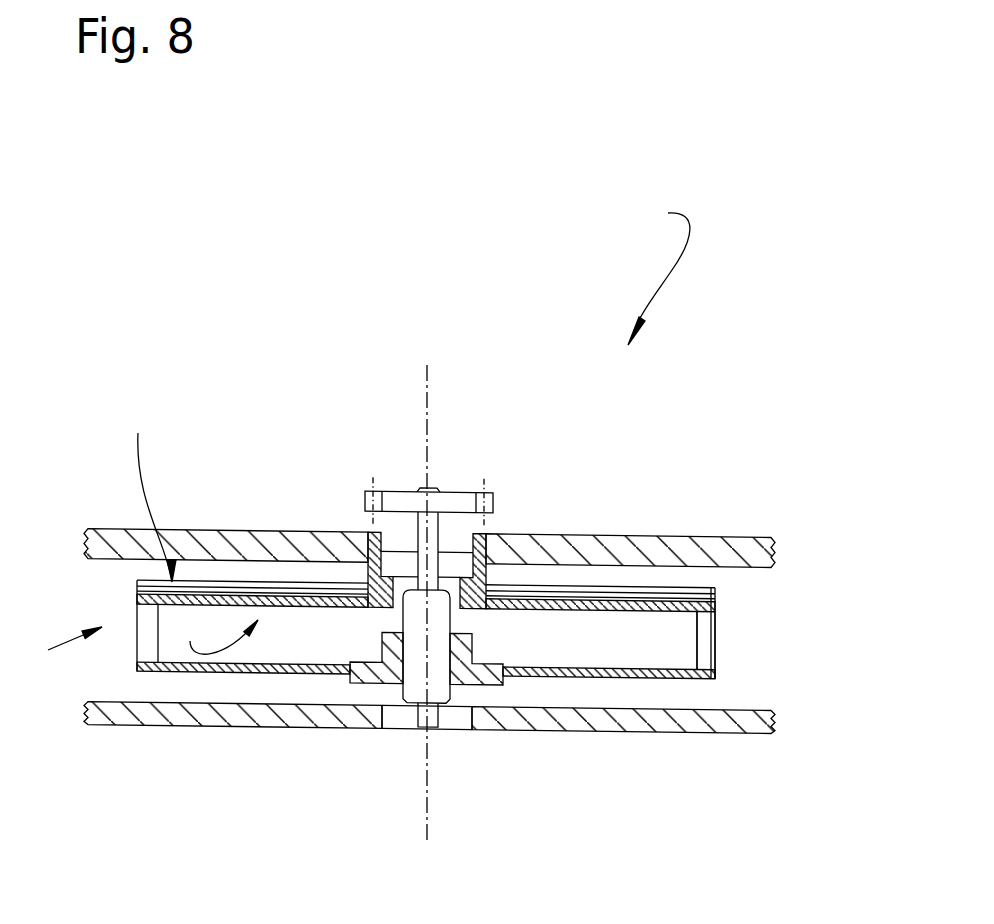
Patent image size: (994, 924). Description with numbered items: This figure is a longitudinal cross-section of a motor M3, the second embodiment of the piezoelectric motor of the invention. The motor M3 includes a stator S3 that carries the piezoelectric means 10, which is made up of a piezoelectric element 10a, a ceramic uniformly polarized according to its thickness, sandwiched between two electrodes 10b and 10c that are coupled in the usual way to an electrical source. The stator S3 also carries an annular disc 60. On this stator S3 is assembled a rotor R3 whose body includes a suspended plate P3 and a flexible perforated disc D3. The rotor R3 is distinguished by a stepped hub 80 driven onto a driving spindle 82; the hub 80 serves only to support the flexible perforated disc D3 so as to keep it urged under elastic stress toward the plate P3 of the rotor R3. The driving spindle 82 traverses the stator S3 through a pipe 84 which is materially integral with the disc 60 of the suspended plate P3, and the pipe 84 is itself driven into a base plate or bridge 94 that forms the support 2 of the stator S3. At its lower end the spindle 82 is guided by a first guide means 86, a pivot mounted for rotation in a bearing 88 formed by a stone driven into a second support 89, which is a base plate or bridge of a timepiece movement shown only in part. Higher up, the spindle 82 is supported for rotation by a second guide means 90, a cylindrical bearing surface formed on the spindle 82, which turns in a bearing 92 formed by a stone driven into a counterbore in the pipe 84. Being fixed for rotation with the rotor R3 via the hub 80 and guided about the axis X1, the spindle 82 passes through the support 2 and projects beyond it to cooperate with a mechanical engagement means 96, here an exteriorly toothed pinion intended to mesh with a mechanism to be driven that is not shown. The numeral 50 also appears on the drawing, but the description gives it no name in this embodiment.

The support 2 is at (275, 340).
The motor M3 is at (659, 269).
The base plate or bridge 94 is at (237, 540).
The bearing 92 is at (400, 567).
The mechanical engagement means 96 is at (405, 503).
The second guide means 90 is at (433, 520).
The pipe 84 is at (485, 553).
The stator S3 is at (149, 489).
The rotor R3 is at (55, 627).
The suspended plate P3 is at (222, 631).
The electrode 10c is at (714, 586).
The piezoelectric element 10a is at (718, 600).
The piezoelectric means 10 is at (748, 608).
The electrode 10b is at (716, 603).
The annular disc 60 is at (569, 604).
The housing side wall 50 is at (705, 655).
The second support 89 is at (252, 717).
The stepped hub 80 is at (395, 668).
The bearing 88 is at (402, 720).
The first guide means 86 is at (432, 715).
The axis X1 is at (424, 824).
The driving spindle 82 is at (473, 698).
The flexible perforated disc D3 is at (630, 675).